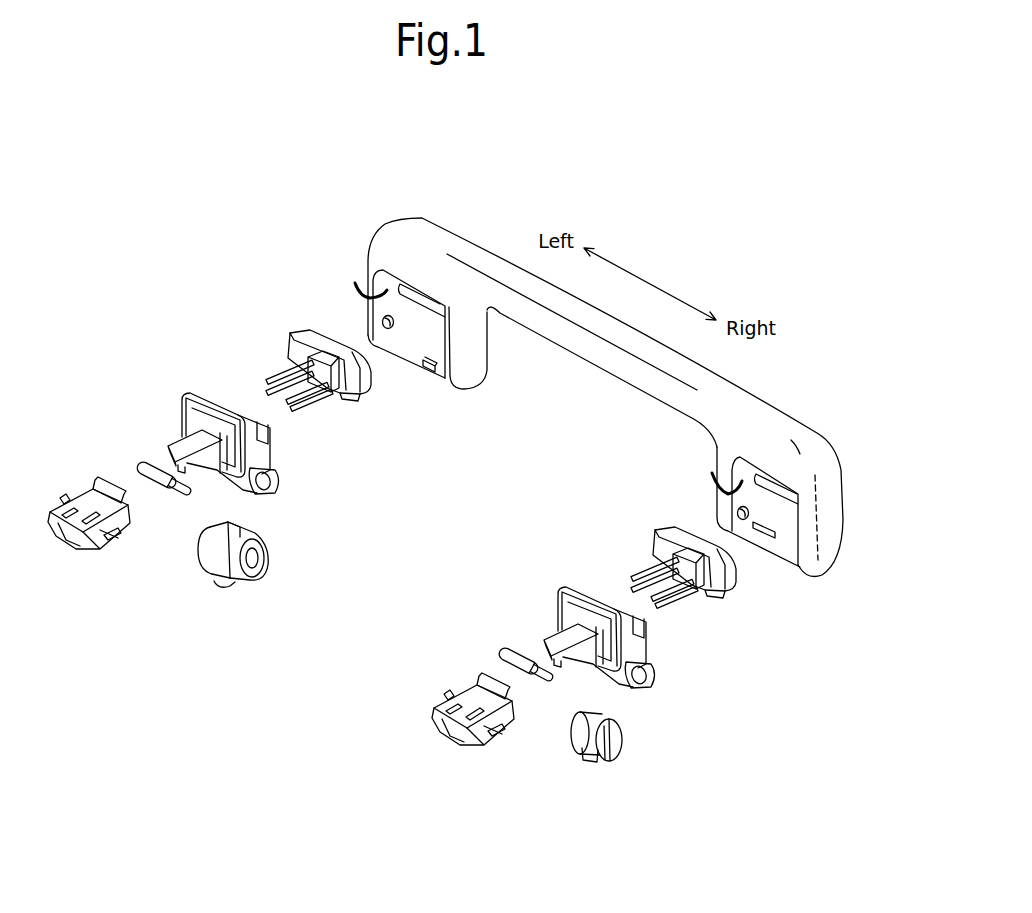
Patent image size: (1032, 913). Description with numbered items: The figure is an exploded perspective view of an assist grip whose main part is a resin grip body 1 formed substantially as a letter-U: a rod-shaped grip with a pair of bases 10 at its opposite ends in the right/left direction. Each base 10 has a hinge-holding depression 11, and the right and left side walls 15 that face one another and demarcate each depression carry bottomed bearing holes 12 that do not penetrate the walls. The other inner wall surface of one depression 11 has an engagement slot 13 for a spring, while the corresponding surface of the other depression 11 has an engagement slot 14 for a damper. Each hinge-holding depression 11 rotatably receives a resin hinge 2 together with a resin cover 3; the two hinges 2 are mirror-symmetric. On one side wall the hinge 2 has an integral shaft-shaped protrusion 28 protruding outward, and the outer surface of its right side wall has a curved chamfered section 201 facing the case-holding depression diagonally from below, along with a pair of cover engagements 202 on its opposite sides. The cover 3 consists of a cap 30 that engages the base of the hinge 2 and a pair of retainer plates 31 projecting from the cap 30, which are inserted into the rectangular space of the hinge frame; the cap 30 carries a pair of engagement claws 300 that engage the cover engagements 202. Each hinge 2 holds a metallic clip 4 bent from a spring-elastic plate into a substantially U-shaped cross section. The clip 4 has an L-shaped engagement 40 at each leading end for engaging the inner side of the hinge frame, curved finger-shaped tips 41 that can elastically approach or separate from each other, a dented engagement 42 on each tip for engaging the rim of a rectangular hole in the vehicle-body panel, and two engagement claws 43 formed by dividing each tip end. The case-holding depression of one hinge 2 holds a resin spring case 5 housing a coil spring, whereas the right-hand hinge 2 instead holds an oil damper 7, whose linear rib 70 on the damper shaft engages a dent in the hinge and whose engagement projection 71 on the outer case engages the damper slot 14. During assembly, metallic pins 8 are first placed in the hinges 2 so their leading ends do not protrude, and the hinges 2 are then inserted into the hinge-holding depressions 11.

The grip body 1 is at (616, 362).
The base 10 is at (468, 358).
The hinge-holding depression 11 is at (407, 337).
The bottomed bearing hole 12 is at (387, 323).
The engagement slot for spring 13 is at (430, 363).
The engagement slot for damper 14 is at (773, 557).
The side wall 15 is at (355, 283).
The hinge 2 is at (471, 523).
The chamfered section 201 is at (277, 473).
The cover engagement 202 is at (272, 437).
The shaft-shaped protrusion 28 is at (658, 681).
The cover 3 is at (481, 439).
The cap 30 is at (363, 375).
The retainer plate 31 is at (285, 370).
The engagement claw 300 is at (352, 402).
The clip 4 is at (274, 570).
The engagement 40 is at (107, 477).
The tip 41 is at (85, 503).
The dented engagement 42 is at (117, 513).
The engagement claw 43 is at (80, 483).
The spring case 5 is at (264, 544).
The oil damper 7 is at (626, 747).
The rib 70 is at (621, 742).
The engagement projection 71 is at (593, 757).
The pin 8 is at (154, 467).